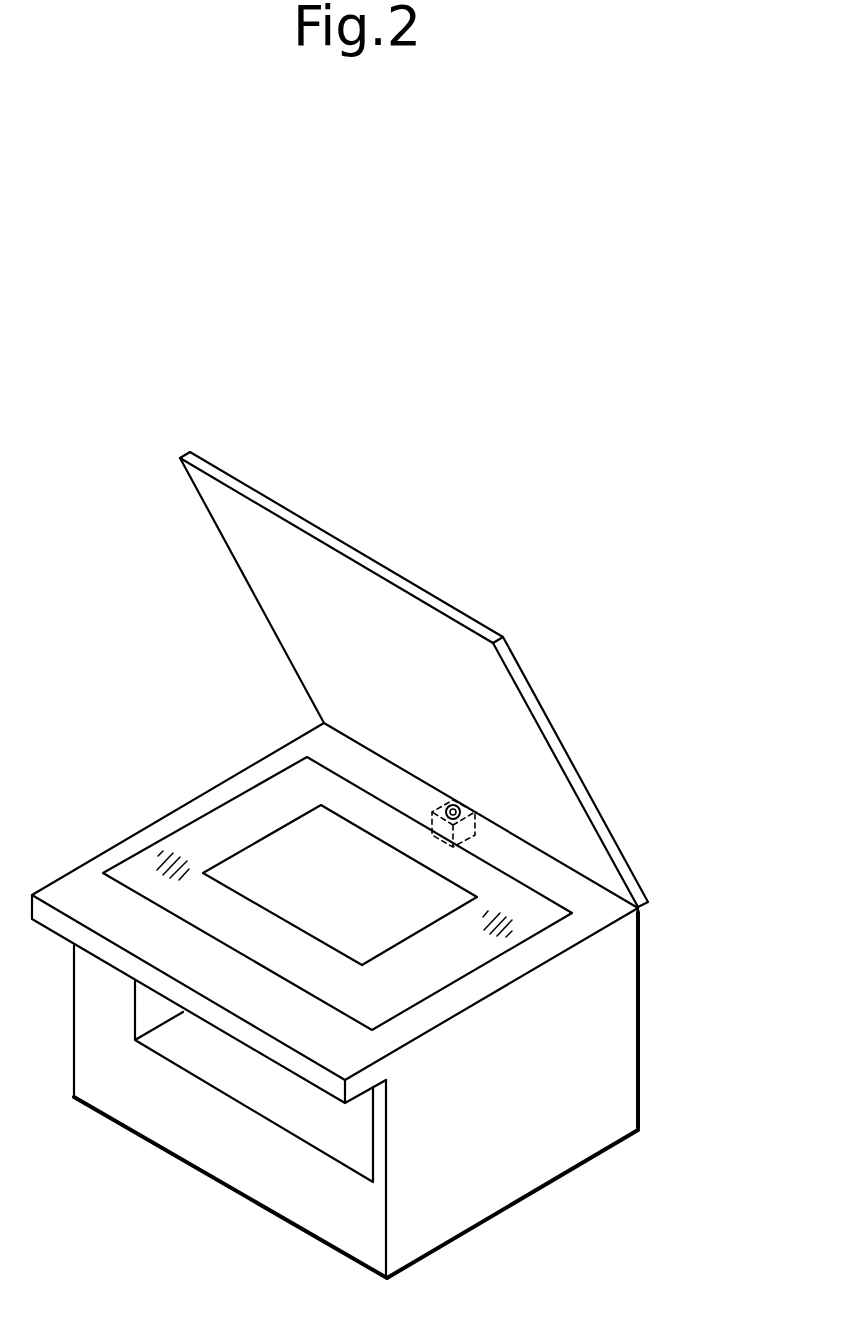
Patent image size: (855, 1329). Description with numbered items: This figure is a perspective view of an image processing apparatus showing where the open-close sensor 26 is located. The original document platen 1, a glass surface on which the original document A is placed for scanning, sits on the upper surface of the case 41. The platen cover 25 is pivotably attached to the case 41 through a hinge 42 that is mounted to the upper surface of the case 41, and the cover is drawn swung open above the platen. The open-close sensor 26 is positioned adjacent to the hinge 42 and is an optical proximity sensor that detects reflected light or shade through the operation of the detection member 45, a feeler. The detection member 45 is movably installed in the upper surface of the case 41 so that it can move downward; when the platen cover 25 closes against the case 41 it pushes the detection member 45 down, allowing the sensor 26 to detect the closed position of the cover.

The document platen 1 is at (180, 843).
The original document A is at (275, 843).
The platen cover 25 is at (415, 583).
The open-close sensor 26 is at (477, 830).
The case 41 is at (642, 1018).
The hinge 42 is at (642, 910).
The detection member (feeler) 45 is at (420, 800).